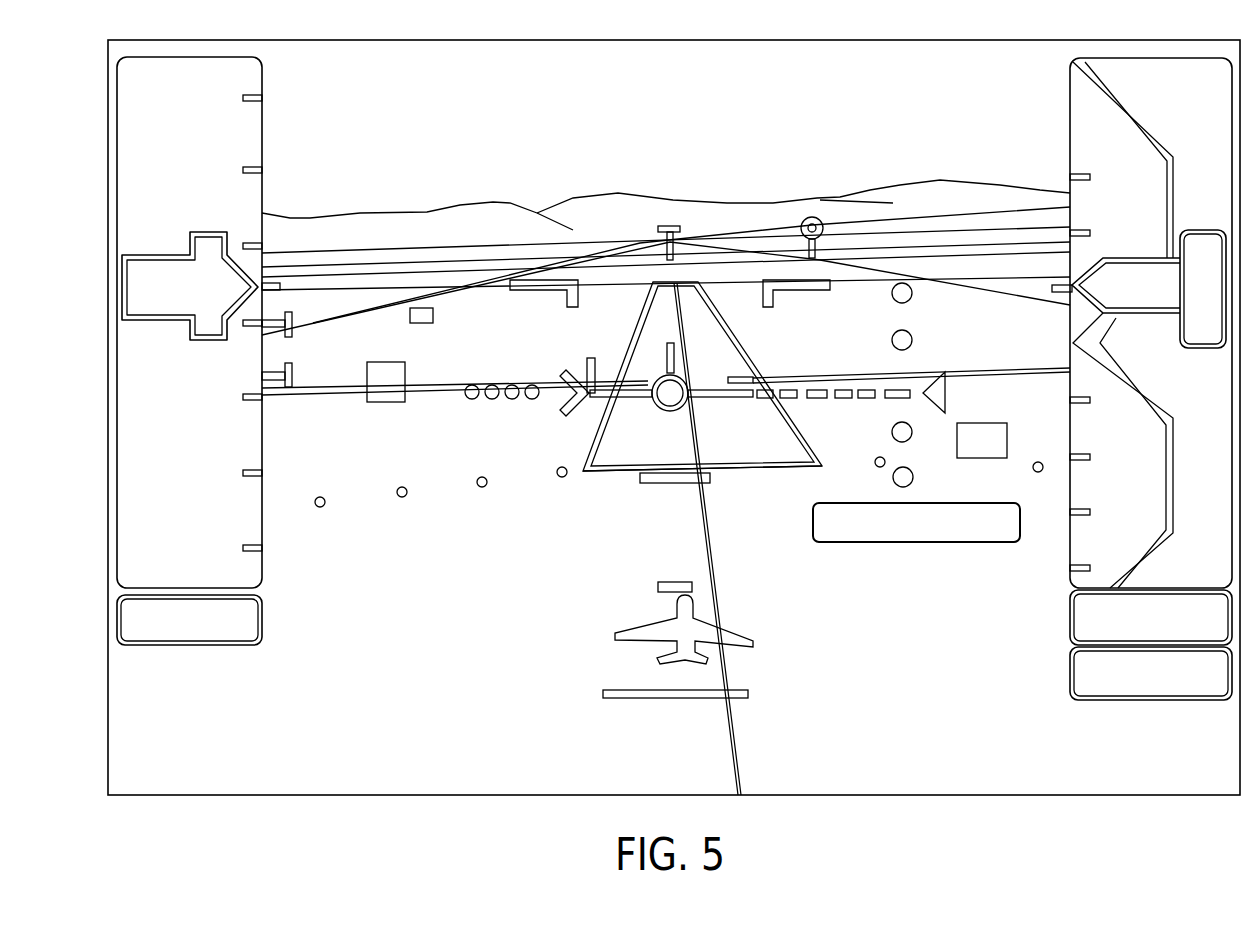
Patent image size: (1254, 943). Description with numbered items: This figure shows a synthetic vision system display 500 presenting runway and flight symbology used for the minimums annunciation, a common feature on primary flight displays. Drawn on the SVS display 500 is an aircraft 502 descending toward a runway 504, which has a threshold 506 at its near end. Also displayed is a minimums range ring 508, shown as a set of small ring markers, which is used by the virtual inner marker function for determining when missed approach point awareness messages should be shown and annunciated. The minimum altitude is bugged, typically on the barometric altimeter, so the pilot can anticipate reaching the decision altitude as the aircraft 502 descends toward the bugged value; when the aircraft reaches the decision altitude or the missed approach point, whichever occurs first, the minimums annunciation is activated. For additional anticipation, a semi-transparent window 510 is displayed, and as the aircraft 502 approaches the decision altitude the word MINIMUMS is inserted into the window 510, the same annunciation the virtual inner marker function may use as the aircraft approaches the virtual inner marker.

The SVS display 500 is at (674, 417).
The aircraft 502 is at (675, 613).
The runway 504 is at (748, 352).
The threshold 506 is at (760, 470).
The minimums range ring 508 is at (320, 507).
The semi-transparent window 510 is at (913, 542).